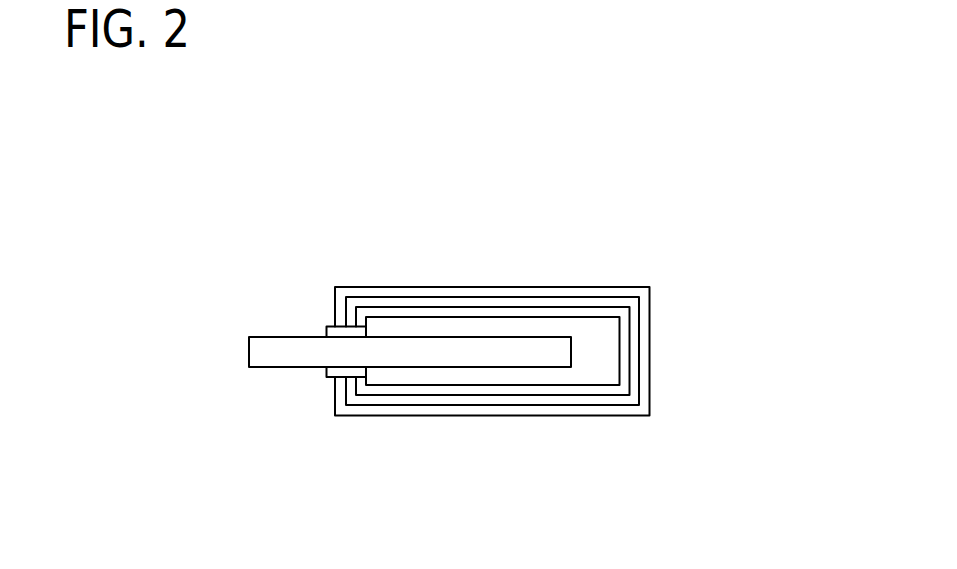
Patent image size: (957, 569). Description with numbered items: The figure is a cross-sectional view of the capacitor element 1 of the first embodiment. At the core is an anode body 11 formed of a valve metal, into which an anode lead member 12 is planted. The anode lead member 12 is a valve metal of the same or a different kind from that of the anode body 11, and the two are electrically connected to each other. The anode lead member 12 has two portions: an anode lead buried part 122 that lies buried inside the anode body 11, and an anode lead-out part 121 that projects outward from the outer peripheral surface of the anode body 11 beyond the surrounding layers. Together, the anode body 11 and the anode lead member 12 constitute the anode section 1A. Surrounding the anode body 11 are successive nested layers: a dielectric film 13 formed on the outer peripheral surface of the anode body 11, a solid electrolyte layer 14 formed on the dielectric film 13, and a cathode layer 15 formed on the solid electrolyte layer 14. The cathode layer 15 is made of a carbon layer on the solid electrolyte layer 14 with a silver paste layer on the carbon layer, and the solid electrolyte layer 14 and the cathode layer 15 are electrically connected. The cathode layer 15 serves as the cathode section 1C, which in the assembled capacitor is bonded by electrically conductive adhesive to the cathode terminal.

The capacitor element 1 is at (612, 128).
The anode section 1A is at (383, 195).
The cathode section 1C is at (542, 195).
The anode body 11 is at (395, 327).
The anode lead member 12 is at (438, 350).
The dielectric film 13 is at (492, 312).
The solid electrolyte layer 14 is at (565, 300).
The cathode layer 15 is at (613, 292).
The anode lead-out part 121 is at (293, 352).
The anode lead buried part 122 is at (472, 350).